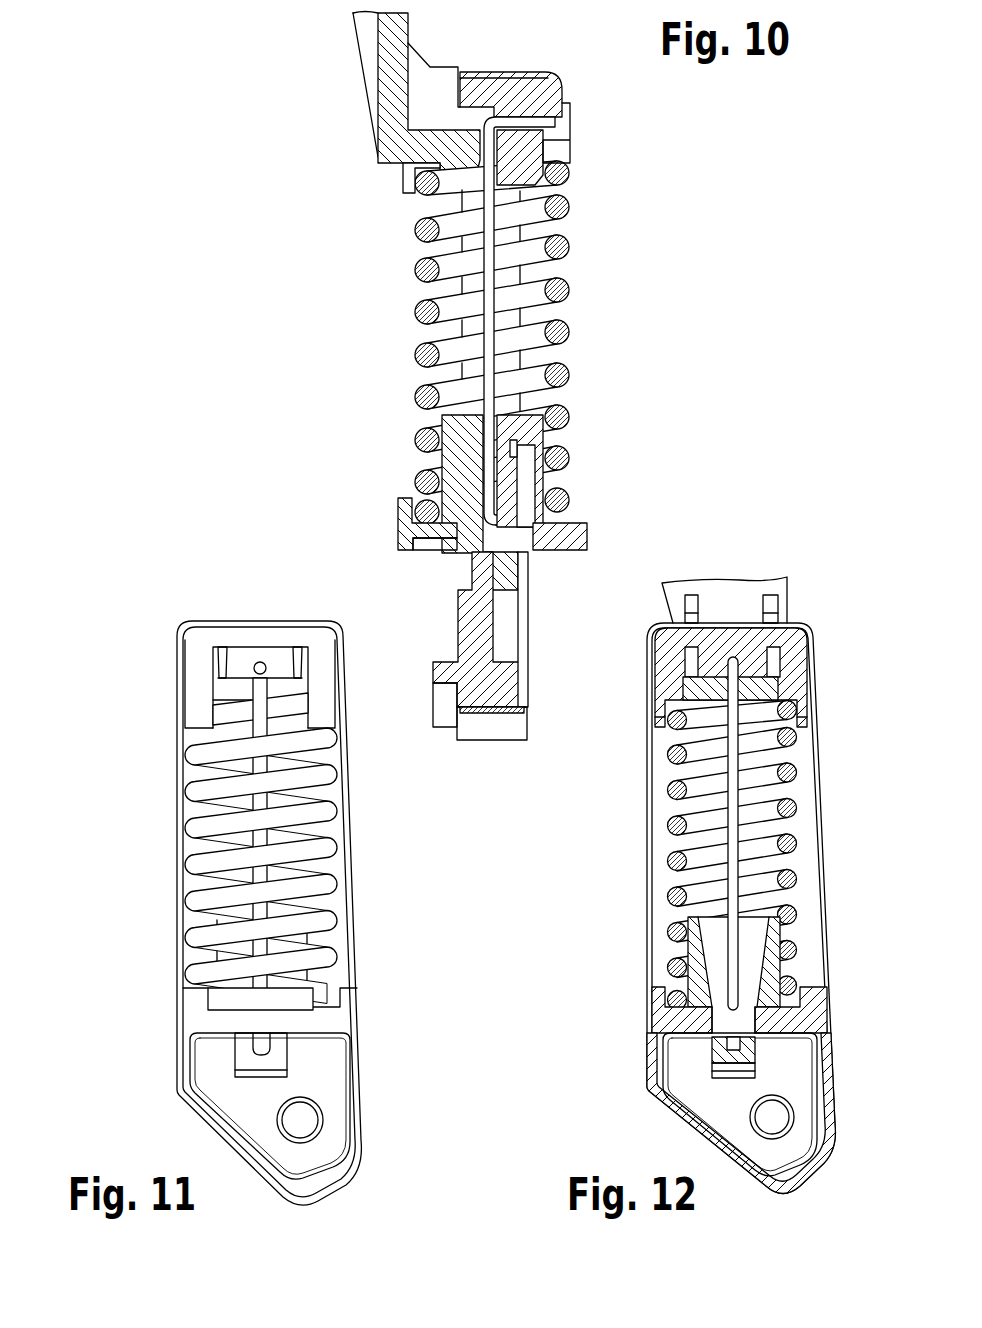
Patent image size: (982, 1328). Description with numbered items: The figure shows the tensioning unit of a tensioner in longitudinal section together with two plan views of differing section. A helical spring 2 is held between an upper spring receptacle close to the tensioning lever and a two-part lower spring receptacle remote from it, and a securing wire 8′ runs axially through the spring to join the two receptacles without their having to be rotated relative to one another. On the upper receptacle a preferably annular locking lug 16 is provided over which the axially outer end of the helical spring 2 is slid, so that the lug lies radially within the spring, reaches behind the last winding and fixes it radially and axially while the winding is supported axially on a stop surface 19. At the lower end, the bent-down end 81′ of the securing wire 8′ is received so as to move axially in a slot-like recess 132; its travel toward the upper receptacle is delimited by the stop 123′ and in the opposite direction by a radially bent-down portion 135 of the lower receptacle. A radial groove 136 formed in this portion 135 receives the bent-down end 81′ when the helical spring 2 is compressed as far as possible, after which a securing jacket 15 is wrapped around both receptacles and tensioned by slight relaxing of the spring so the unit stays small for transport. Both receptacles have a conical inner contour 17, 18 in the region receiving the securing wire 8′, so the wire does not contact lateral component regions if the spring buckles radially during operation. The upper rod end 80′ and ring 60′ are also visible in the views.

In FIG. 10, the helical spring 2 is at (560, 248).
In FIG. 11, the helical spring 2 is at (200, 938).
In FIG. 12, the helical spring 2 is at (668, 897).
In FIG. 10, the securing wire 8′ is at (482, 380).
In FIG. 11, the securing wire 8′ is at (200, 868).
In FIG. 12, the securing wire 8′ is at (738, 823).
In FIG. 10, the securing jacket 15 is at (423, 293).
In FIG. 11, the securing jacket 15 is at (177, 815).
In FIG. 12, the securing jacket 15 is at (655, 818).
In FIG. 10, the locking lug 16 is at (457, 207).
In FIG. 12, the conical inner contour 17 is at (750, 937).
In FIG. 12, the conical inner contour 18 is at (800, 685).
In FIG. 10, the stop surface 19 is at (423, 193).
In FIG. 10, the ring 60′ is at (403, 180).
In FIG. 11, the ring 60′ is at (190, 722).
In FIG. 12, the ring 60′ is at (653, 717).
In FIG. 10, the upper rod end 80′ is at (553, 116).
In FIG. 10, the bent-down end of securing wire 81′ is at (523, 518).
In FIG. 12, the bent-down end of securing wire 81′ is at (736, 1003).
In FIG. 10, the stop 123′ is at (537, 447).
In FIG. 10, the slot-like recess 132 is at (527, 477).
In FIG. 10, the radially bent-down portion 135 is at (513, 580).
In FIG. 11, the radially bent-down portion 135 is at (245, 1058).
In FIG. 12, the radially bent-down portion 135 is at (712, 1057).
In FIG. 10, the radial groove 136 is at (505, 560).
In FIG. 11, the radial groove 136 is at (270, 1045).
In FIG. 12, the radial groove 136 is at (725, 1030).